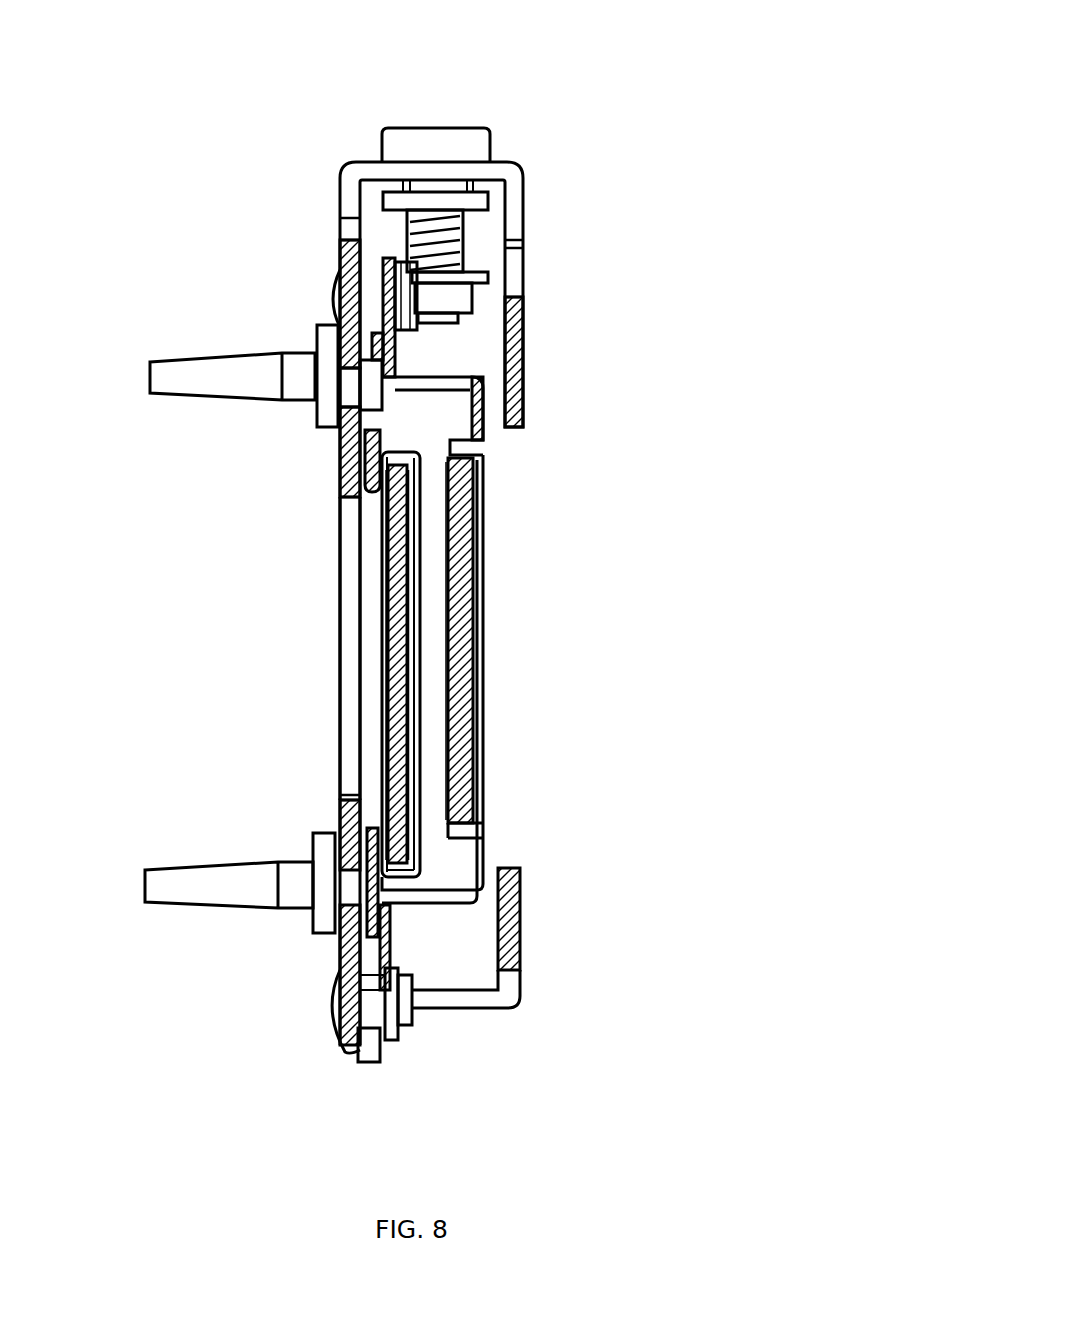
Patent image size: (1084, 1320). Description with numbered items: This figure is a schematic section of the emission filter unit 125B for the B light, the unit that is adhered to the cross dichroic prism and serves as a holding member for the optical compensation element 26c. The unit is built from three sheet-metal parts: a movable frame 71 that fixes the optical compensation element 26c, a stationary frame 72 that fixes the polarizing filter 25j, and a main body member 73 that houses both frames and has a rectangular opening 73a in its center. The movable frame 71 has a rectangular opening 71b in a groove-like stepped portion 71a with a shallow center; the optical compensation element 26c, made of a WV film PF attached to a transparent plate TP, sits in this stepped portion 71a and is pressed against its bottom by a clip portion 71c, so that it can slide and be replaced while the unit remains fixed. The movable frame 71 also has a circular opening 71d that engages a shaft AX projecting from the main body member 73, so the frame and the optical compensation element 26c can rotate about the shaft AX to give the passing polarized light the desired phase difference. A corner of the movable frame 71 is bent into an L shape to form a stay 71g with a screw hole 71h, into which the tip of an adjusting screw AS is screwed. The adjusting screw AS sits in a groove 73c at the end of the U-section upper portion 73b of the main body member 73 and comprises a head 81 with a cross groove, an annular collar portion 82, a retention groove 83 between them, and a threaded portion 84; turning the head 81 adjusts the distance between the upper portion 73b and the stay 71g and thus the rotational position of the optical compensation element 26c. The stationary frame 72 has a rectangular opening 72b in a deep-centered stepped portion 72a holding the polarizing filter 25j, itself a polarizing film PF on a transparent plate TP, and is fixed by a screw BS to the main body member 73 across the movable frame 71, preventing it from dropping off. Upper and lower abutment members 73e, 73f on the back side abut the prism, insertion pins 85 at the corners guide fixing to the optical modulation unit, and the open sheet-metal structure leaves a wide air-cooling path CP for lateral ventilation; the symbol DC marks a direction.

The emission filter unit 125B is at (728, 30).
The main body member 73 is at (526, 200).
The rectangular opening 73a is at (348, 685).
The upper portion 73b is at (373, 170).
The groove 73c is at (408, 190).
The upper abutment member 73e is at (505, 403).
The lower abutment member 73f is at (522, 898).
The head 81 is at (445, 148).
The collar portion 82 is at (380, 197).
The retention groove 83 is at (510, 180).
The threaded portion 84 is at (432, 228).
The adjusting screw AS is at (497, 122).
The movable frame 71 is at (422, 445).
The stepped portion 71a is at (340, 920).
The rectangular opening 71b is at (413, 587).
The clip portion 71c is at (368, 488).
The circular opening 71d is at (322, 320).
The stay 71g is at (470, 248).
The screw hole 71h is at (477, 293).
The stationary frame 72 is at (488, 834).
The stepped portion 72a is at (467, 860).
The rectangular opening 72b is at (475, 770).
The polarizing filter 25j is at (487, 731).
The optical compensation element 26c is at (375, 708).
The insertion pin 85 is at (195, 353).
The shaft AX is at (325, 420).
The screw BS is at (338, 290).
The air-cooling path CP is at (460, 347).
The film PF is at (392, 585).
The transparent plate TP is at (393, 657).
The direction DC is at (728, 857).